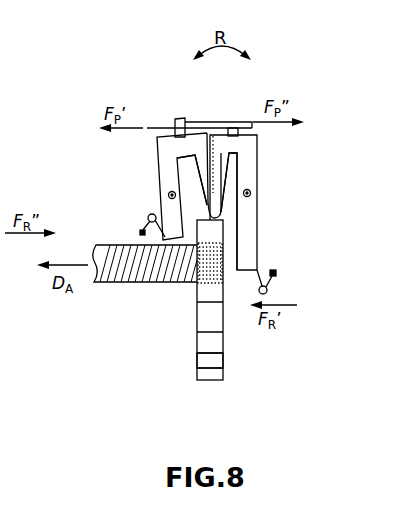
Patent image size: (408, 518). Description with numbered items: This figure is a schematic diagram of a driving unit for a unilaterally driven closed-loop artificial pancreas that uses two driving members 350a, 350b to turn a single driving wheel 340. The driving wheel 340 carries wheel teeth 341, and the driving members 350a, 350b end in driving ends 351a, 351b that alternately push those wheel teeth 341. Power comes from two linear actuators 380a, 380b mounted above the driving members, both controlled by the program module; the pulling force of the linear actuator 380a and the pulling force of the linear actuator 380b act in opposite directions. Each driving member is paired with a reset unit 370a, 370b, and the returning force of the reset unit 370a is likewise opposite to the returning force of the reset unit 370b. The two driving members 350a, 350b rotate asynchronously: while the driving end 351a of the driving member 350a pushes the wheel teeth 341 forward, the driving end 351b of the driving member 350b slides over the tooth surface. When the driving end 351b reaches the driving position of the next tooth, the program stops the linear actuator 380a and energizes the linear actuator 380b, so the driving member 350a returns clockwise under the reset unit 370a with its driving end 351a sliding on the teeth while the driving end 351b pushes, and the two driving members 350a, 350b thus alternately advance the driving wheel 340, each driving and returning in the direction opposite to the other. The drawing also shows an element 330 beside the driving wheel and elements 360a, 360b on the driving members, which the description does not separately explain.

The rack bar 330 is at (143, 283).
The driving wheel 340 is at (210, 380).
The wheel teeth 341 is at (217, 362).
The driving member 350a is at (251, 152).
The driving member 350b is at (157, 150).
The driving end 351a is at (225, 214).
The driving end 351b is at (199, 170).
The right pivot pin 360a is at (251, 193).
The left pivot pin 360b is at (168, 195).
The reset unit 370a is at (267, 290).
The reset unit 370b is at (148, 218).
The linear actuator 380a is at (160, 127).
The linear actuator 380b is at (212, 122).